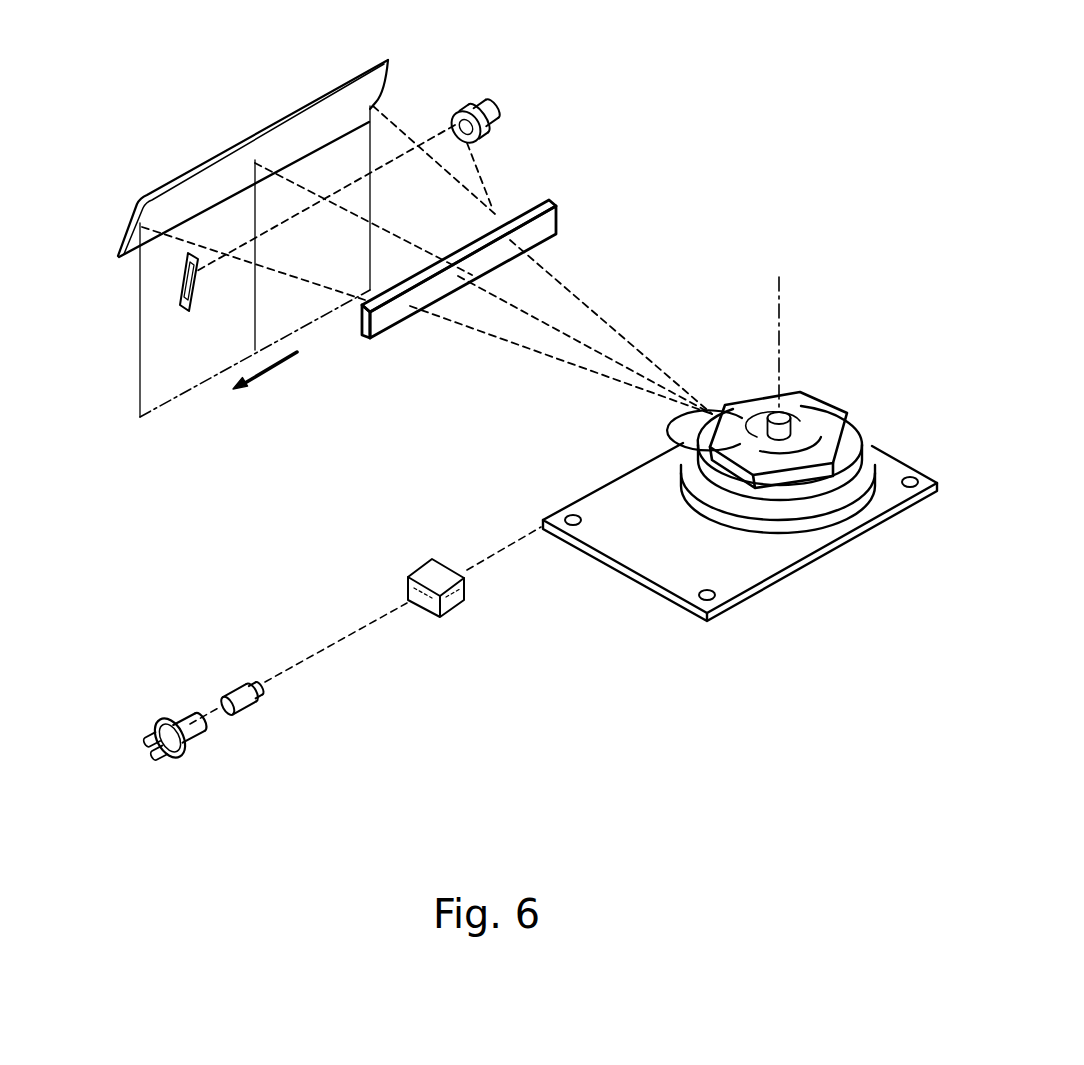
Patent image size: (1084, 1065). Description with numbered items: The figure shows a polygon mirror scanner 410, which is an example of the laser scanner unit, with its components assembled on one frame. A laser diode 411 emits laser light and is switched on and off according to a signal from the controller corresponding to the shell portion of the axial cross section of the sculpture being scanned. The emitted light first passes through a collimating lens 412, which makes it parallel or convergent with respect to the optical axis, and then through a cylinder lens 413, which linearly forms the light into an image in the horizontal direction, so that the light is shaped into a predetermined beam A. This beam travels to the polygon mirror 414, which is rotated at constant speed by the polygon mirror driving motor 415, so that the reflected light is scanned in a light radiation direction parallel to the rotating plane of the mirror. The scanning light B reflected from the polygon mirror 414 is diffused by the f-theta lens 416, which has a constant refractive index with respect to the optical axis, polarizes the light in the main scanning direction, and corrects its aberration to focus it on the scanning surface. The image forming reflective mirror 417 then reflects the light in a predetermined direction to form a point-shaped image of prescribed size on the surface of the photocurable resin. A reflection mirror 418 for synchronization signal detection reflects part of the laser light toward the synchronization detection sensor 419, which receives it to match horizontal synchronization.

The polygon mirror scanner 410 is at (815, 52).
The laser diode 411 is at (190, 716).
The collimating lens 412 is at (248, 683).
The cylinder lens 413 is at (463, 597).
The polygon mirror 414 is at (806, 420).
The polygon mirror driving motor 415 is at (860, 430).
The f-theta lens 416 is at (527, 205).
The image forming reflective mirror 417 is at (230, 152).
The reflection mirror for synchronization signal detection 418 is at (180, 287).
The synchronization detection sensor 419 is at (492, 102).
The beam A is at (500, 552).
The axis B is at (590, 348).